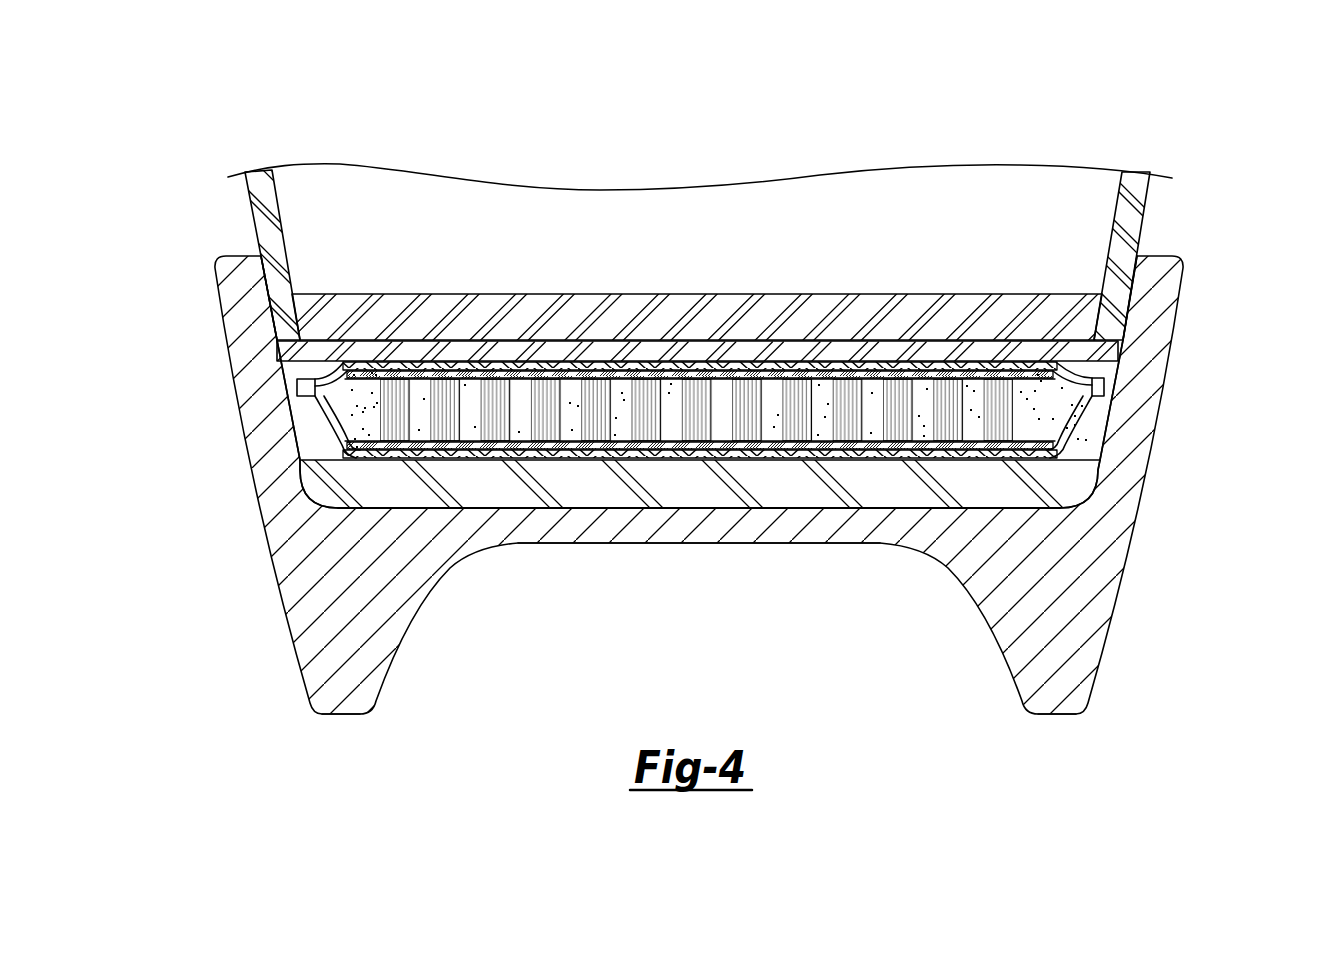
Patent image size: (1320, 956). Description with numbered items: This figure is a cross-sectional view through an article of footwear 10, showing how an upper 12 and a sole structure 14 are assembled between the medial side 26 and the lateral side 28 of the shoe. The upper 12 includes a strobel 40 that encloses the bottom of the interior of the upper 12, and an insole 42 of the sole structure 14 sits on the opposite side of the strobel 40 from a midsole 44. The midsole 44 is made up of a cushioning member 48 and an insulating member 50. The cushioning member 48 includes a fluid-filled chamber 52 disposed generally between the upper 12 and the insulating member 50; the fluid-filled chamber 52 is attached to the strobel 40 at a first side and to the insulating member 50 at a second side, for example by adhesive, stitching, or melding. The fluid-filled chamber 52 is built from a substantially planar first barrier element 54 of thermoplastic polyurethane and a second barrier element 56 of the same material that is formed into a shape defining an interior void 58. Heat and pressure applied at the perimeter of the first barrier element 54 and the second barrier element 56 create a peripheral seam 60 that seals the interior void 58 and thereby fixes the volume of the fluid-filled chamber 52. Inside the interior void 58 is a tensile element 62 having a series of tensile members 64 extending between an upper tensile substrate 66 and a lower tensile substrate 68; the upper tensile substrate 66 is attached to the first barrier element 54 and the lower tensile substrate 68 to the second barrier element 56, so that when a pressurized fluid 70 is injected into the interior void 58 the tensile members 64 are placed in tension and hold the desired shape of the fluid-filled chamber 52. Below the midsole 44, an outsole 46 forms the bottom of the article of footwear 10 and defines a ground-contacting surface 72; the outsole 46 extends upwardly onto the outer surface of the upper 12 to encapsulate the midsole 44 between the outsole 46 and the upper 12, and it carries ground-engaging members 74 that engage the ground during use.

The article of footwear 10 is at (1165, 118).
The upper 12 is at (1180, 204).
The sole structure 14 is at (700, 530).
The medial side 26 is at (1182, 305).
The lateral side 28 is at (215, 282).
The strobel 40 is at (553, 358).
The insole 42 is at (432, 294).
The midsole 44 is at (682, 567).
The outsole 46 is at (628, 552).
The cushioning member 48 is at (555, 472).
The insulating member 50 is at (505, 520).
The fluid-filled chamber 52 is at (1088, 405).
The first barrier element 54 is at (933, 360).
The second barrier element 56 is at (871, 460).
The interior void 58 is at (1153, 418).
The peripheral seam 60 is at (300, 387).
The tensile element 62 is at (372, 428).
The tensile members 64 is at (372, 426).
The upper tensile substrate 66 is at (606, 380).
The lower tensile substrate 68 is at (662, 447).
The pressurized fluid 70 is at (1041, 381).
The ground-contacting surface 72 is at (748, 545).
The ground-engaging members 74 is at (341, 715).